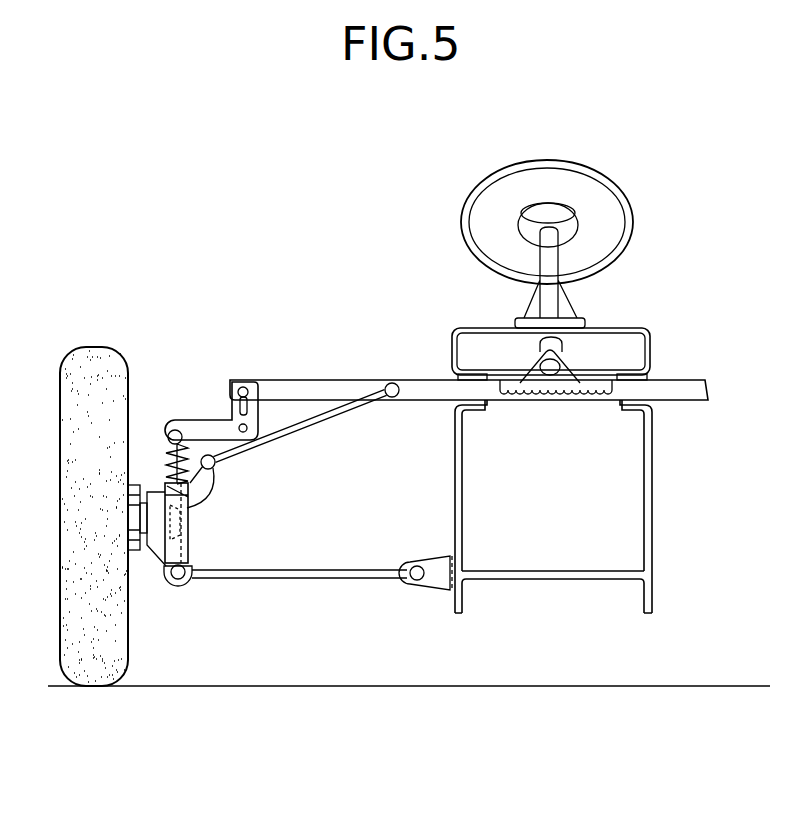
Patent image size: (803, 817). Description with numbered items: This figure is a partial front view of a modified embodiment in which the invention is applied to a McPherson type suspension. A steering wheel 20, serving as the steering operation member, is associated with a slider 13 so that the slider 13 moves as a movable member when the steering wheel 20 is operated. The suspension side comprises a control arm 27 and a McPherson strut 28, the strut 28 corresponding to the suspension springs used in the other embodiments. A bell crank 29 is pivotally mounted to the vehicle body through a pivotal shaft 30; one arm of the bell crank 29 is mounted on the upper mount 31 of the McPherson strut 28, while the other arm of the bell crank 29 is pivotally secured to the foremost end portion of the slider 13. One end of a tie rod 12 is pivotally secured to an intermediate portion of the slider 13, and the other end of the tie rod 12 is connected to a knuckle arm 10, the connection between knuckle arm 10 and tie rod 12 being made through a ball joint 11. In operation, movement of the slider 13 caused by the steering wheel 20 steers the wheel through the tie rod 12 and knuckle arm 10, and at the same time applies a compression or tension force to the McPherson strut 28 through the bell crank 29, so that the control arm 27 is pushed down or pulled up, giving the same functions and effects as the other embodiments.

The knuckle arm 10 is at (203, 488).
The ball joint 11 is at (214, 464).
The tie rod 12 is at (333, 417).
The slider 13 is at (427, 379).
The steering wheel 20 is at (632, 228).
The control arm 27 is at (292, 580).
The McPherson strut 28 is at (190, 543).
The bell crank 29 is at (203, 427).
The pivotal shaft 30 is at (267, 438).
The upper mount 31 is at (168, 441).